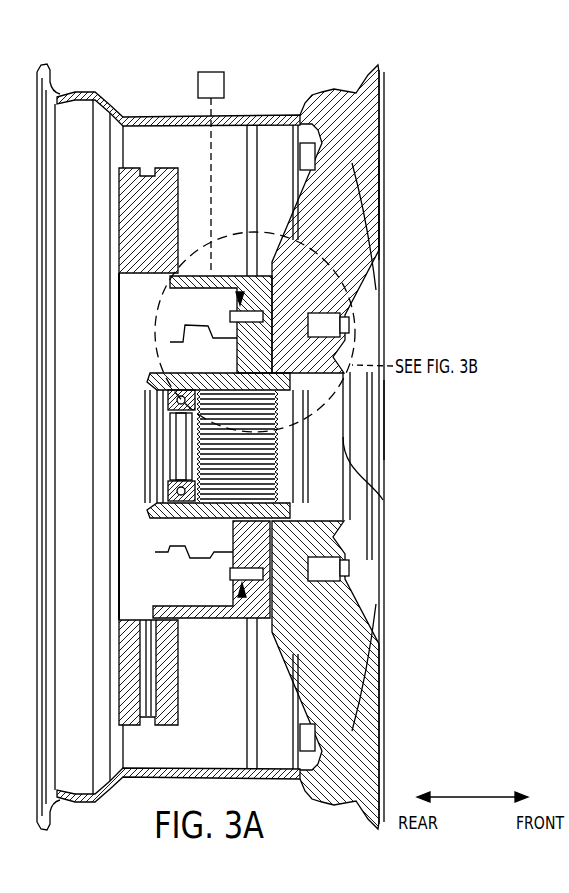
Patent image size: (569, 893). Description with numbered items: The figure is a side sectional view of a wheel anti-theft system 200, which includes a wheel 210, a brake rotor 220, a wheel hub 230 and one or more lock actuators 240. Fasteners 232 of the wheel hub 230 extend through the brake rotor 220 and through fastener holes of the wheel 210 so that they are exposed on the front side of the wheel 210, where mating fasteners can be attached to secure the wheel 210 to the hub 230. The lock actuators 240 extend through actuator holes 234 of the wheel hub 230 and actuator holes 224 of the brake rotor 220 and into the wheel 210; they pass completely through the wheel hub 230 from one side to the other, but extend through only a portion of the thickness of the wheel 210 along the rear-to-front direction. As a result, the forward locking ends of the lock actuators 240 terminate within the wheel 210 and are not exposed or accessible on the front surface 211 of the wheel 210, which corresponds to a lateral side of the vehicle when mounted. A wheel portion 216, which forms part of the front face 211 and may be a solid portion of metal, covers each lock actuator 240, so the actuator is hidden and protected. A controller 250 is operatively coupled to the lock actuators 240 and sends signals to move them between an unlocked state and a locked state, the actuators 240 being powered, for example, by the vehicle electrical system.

The wheel anti-theft system 200 is at (490, 147).
The wheel 210 is at (384, 213).
The front surface 211 is at (402, 420).
The wheel portion 216 is at (290, 310).
The brake rotor 220 is at (178, 203).
The actuator holes 224 is at (258, 338).
The wheel hub 230 is at (240, 542).
The fasteners 232 is at (352, 322).
The actuator holes 234 is at (241, 292).
The lock actuators 240 is at (230, 316).
The controller 250 is at (224, 85).